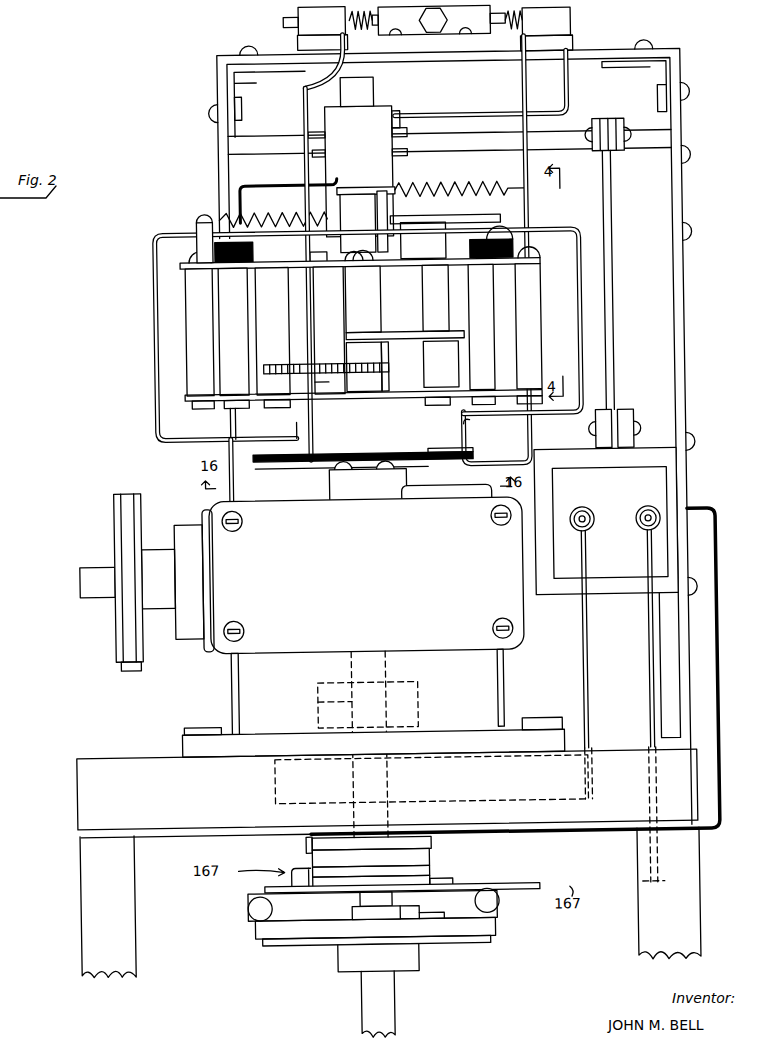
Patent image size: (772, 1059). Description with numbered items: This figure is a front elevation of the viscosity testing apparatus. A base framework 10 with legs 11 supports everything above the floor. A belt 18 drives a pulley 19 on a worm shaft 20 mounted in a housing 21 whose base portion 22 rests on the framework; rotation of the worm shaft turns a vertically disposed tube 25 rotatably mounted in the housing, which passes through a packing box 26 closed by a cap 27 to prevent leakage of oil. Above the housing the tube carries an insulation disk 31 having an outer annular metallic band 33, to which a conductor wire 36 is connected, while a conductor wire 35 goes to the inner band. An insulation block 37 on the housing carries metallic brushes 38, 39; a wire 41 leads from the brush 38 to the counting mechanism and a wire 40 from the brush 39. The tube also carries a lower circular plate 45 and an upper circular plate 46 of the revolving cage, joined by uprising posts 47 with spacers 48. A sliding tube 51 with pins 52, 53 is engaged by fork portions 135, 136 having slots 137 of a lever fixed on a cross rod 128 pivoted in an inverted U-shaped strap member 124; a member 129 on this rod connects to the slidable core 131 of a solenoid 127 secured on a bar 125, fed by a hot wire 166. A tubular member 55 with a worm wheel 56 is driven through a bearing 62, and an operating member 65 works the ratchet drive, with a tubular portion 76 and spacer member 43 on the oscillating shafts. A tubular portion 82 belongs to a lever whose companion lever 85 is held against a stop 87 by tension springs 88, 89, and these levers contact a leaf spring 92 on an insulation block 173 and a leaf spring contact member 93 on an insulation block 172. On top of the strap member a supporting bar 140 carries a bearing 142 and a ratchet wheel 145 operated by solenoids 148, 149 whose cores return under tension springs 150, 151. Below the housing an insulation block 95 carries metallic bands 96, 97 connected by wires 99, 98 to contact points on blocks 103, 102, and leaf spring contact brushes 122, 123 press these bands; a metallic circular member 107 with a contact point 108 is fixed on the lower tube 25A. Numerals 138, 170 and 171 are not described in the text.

The base framework 10 is at (387, 793).
The legs 11 is at (74, 962).
The belt 18 is at (128, 666).
The pulley 19 is at (113, 648).
The worm shaft 20 is at (78, 594).
The housing 21 is at (350, 611).
The base portion 22 is at (373, 737).
The tube 25 is at (392, 768).
The tube 25A is at (386, 1000).
The packing box 26 is at (414, 720).
The cap 27 is at (414, 695).
The insulation disk 31 is at (403, 448).
The outer annular metallic band 33 is at (363, 468).
The conductor wire 35 is at (205, 444).
The conductor wire 36 is at (468, 432).
The insulation block 37 is at (375, 527).
The metallic brush 38 is at (343, 471).
The metallic brush 39 is at (388, 471).
The wire 40 is at (533, 210).
The wire 41 is at (316, 434).
The spacer member 43 is at (363, 299).
The circular plate 45 is at (192, 400).
The upper circular plate 46 is at (186, 267).
The uprising posts 47 is at (195, 255).
The spacers 48 is at (549, 330).
The tube 51 is at (397, 170).
The pin 52 is at (313, 133).
The pin 53 is at (412, 133).
The tubular member 55 is at (327, 383).
The worm wheel 56 is at (297, 362).
The bearing 62 is at (441, 364).
The operating member 65 is at (396, 331).
The tubular portion 76 is at (367, 367).
The tubular portion 82 is at (530, 214).
The lever 85 is at (372, 186).
The stop 87 is at (391, 240).
The tension spring 88 is at (290, 210).
The tension spring 89 is at (440, 187).
The metallic contact leaf spring 92 is at (282, 183).
The leaf spring contact member 93 is at (445, 215).
The insulation block 95 is at (423, 858).
The metallic band 96 is at (425, 842).
The metallic band 97 is at (430, 876).
The wire 98 is at (373, 918).
The wire 99 is at (427, 905).
The block 102 is at (258, 887).
The block 103 is at (449, 907).
The metallic circular member 107 is at (413, 958).
The contact point 108 is at (241, 908).
The leaf spring contact brush 122 is at (300, 841).
The leaf spring contact brush 123 is at (285, 870).
The inverted U-shaped strap member 124 is at (686, 168).
The bar 125 is at (686, 494).
The solenoid 127 is at (606, 520).
The cross rod 128 is at (476, 140).
The member 129 is at (622, 121).
The slidable core 131 is at (617, 304).
The fork portion 135 is at (346, 112).
The fork portion 136 is at (405, 111).
The slot 137 is at (317, 152).
The lug 138 is at (412, 151).
The supporting bar 140 is at (574, 48).
The bearing 142 is at (480, 21).
The ratchet wheel 145 is at (434, 20).
The solenoid 148 is at (314, 21).
The solenoid 149 is at (546, 21).
The tension spring 150 is at (362, 29).
The tension spring 151 is at (509, 27).
The hot wire 166 is at (478, 797).
The wire 170 is at (302, 80).
The bracket 171 is at (573, 98).
The insulation block 172 is at (473, 246).
The insulation block 173 is at (258, 244).